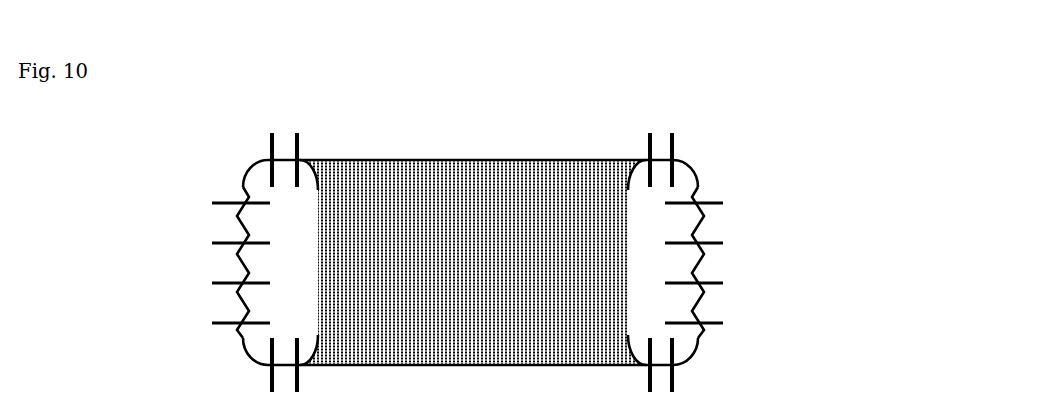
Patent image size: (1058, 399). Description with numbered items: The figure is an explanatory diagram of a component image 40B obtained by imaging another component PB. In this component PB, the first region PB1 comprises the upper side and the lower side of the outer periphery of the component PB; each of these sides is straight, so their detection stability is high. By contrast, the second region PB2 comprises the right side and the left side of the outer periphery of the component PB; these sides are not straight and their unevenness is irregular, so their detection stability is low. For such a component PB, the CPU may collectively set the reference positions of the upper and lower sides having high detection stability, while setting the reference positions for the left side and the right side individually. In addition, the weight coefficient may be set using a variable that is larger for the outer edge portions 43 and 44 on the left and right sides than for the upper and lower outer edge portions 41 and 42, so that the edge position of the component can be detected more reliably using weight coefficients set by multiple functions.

The component image 40B is at (840, 117).
The outer edge portion 41 is at (742, 147).
The outer edge portion 42 is at (742, 353).
The outer edge portion 43 is at (223, 126).
The outer edge portion 44 is at (712, 126).
The component PB is at (583, 157).
The first region PB1 is at (452, 195).
The second region PB2 is at (660, 228).